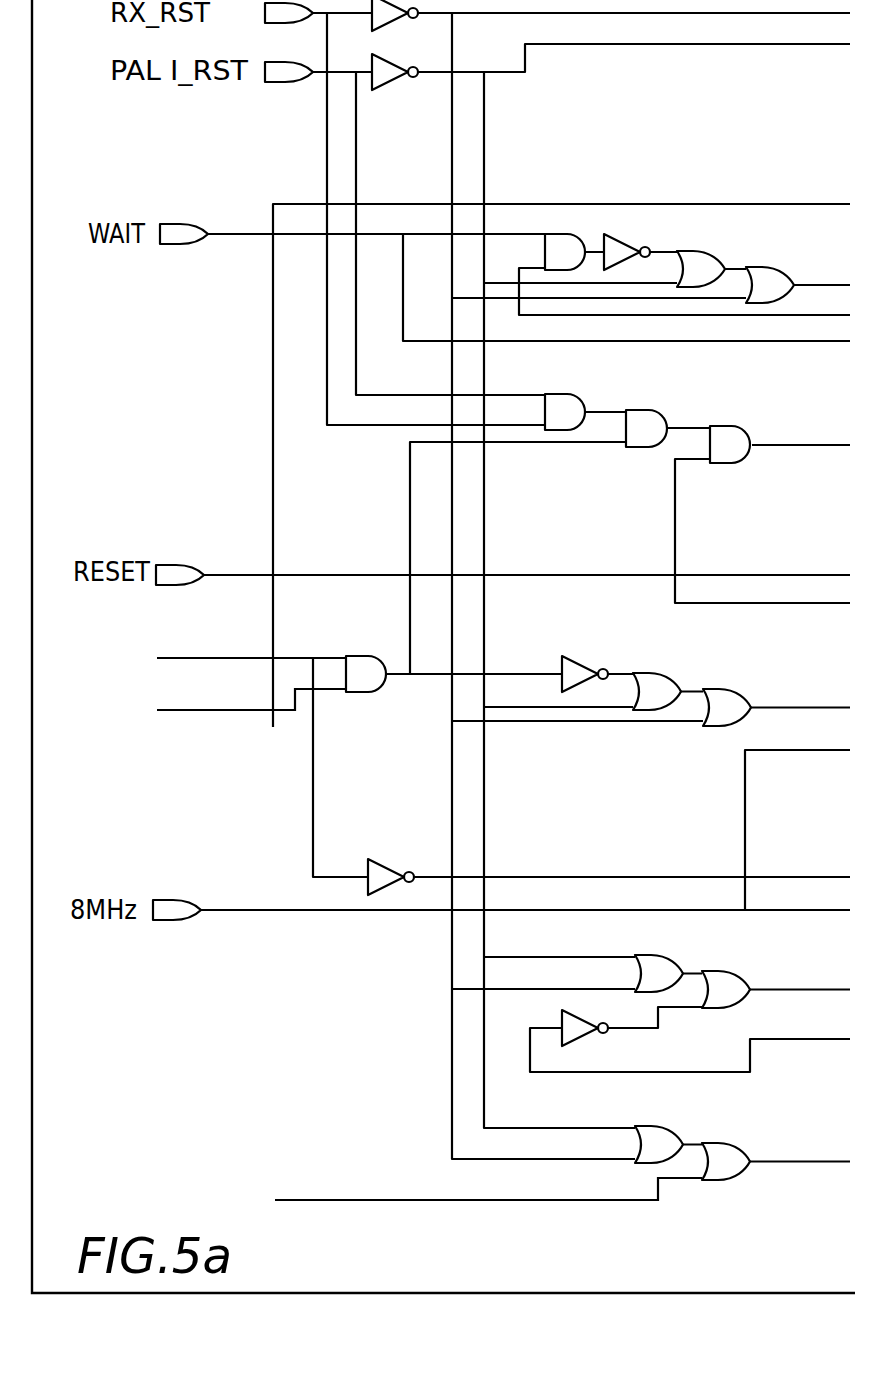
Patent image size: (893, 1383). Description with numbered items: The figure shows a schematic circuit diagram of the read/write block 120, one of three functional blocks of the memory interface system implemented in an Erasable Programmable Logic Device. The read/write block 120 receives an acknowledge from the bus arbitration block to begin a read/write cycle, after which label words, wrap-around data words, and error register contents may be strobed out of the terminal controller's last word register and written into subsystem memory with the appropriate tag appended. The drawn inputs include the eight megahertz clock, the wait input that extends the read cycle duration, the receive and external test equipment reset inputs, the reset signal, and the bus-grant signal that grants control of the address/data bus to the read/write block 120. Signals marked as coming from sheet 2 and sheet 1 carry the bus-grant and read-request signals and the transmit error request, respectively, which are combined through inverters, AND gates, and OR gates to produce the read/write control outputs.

The read/write block 120 is at (727, 1293).
The sheet 2 connector (RD_OUT / RD_REQ signals) 2 is at (197, 675).
The sheet 1 connector (TX_ER_REQ signal) 1 is at (435, 1191).